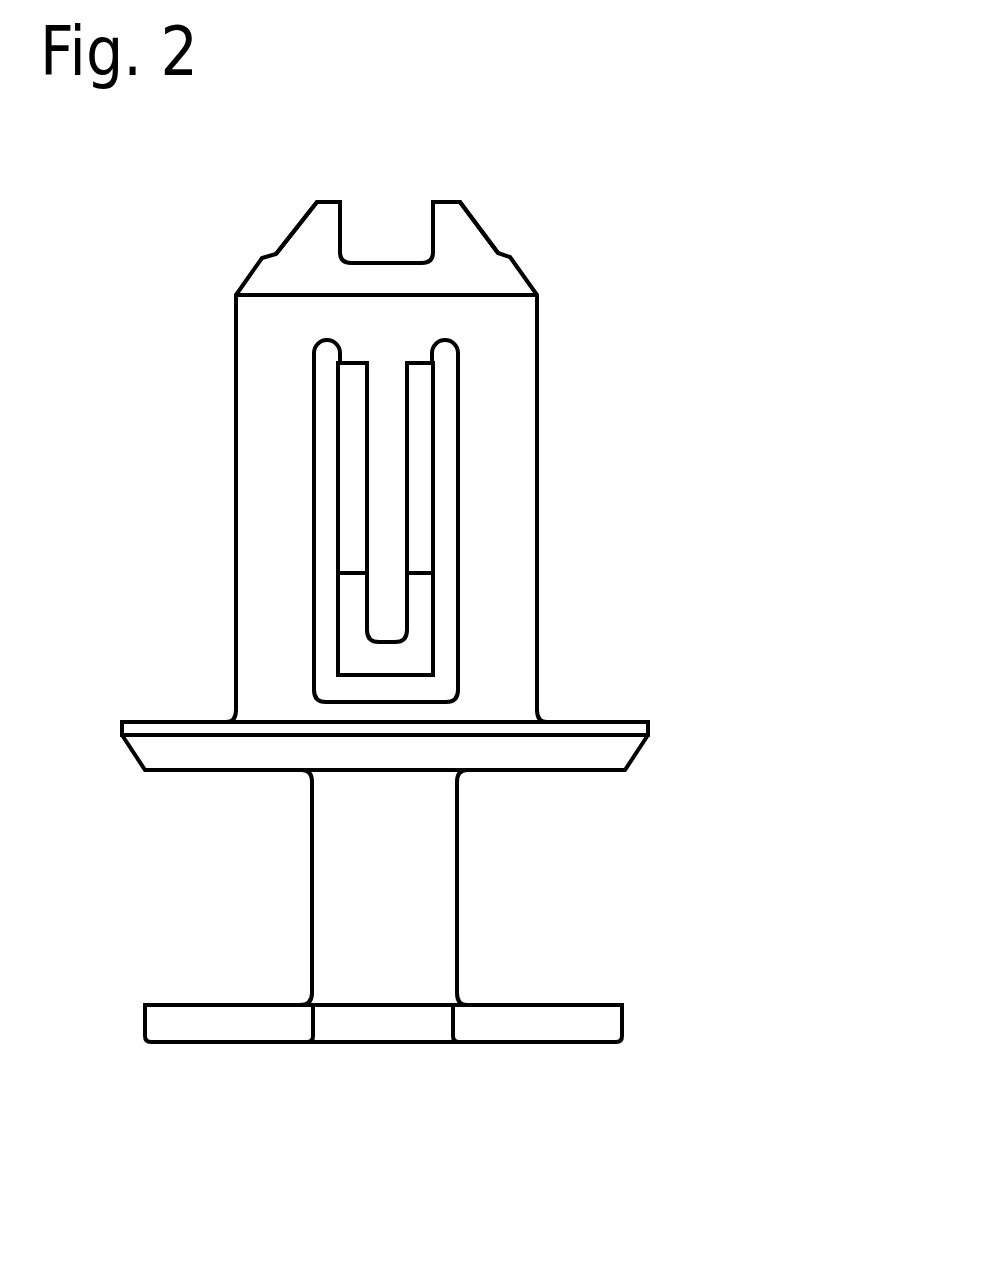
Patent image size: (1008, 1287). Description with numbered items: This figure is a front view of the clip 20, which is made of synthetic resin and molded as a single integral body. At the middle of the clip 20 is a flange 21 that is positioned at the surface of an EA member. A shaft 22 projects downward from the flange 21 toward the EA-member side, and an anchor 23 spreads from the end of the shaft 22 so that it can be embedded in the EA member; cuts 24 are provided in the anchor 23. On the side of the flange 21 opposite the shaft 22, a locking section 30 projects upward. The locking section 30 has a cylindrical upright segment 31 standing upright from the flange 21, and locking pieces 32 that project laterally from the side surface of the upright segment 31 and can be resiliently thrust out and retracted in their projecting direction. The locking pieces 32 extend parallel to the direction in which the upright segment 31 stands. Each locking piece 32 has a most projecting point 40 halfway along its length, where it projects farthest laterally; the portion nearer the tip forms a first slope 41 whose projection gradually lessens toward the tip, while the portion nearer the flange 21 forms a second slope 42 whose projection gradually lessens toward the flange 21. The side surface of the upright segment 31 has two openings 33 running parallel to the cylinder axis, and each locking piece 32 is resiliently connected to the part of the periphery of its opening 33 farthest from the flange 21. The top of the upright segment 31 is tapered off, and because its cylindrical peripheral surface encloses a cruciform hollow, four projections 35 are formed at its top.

The clip 20 is at (758, 487).
The flange 21 is at (627, 753).
The shaft 22 is at (442, 878).
The anchor 23 is at (578, 1012).
The cuts 24 is at (313, 1022).
The locking section 30 is at (583, 432).
The upright segment 31 is at (527, 322).
The locking pieces 32 is at (333, 518).
The openings 33 is at (450, 536).
The projections 35 is at (292, 233).
The most projecting point 40 is at (416, 576).
The first slope 41 is at (418, 484).
The second slope 42 is at (413, 638).